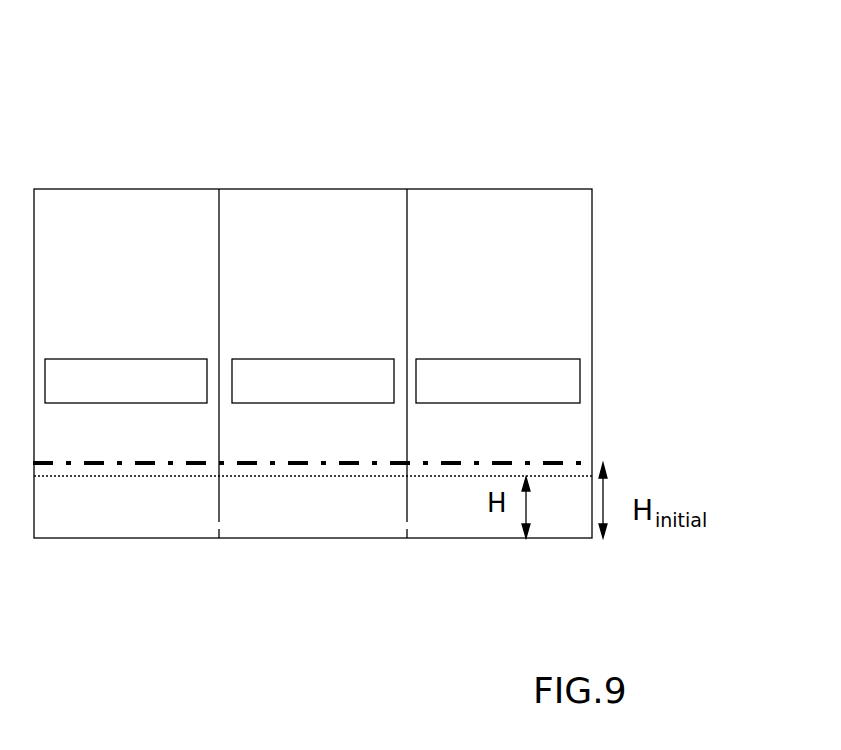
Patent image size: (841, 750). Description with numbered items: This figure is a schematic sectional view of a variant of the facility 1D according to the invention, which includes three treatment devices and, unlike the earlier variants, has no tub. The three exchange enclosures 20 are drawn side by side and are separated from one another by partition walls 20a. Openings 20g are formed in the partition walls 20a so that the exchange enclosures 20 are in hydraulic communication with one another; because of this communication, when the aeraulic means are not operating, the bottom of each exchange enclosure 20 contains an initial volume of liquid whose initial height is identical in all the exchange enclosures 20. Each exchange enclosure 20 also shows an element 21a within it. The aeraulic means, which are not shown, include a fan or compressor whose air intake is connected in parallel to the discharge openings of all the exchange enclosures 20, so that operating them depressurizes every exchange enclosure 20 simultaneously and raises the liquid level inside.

The facility 1D is at (546, 132).
The exchange enclosure 20 is at (153, 217).
The partition wall 20a is at (220, 307).
The electrode terminal 21a is at (120, 375).
The opening 20g is at (221, 528).